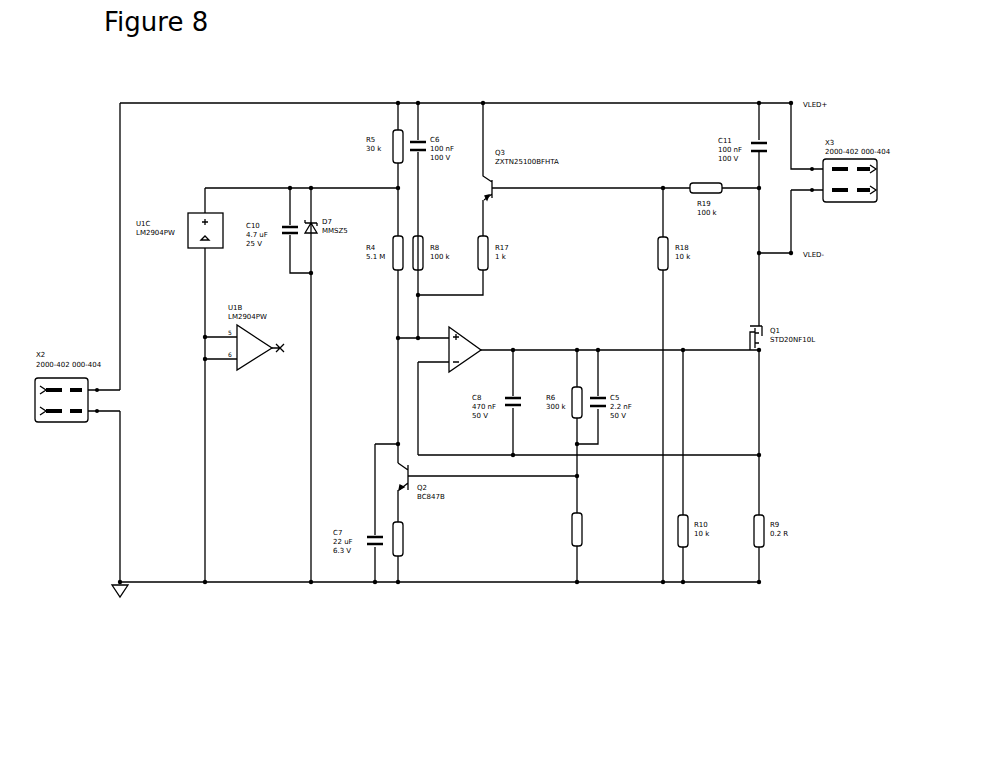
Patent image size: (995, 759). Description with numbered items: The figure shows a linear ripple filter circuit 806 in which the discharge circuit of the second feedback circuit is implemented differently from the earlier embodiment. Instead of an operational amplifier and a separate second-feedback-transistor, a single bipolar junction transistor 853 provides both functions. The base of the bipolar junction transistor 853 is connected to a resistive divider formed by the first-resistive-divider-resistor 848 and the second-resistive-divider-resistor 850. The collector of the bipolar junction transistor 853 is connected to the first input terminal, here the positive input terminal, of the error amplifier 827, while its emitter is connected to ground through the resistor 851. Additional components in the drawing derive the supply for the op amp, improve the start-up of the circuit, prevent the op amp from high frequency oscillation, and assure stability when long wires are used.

The ripple filter circuit 806 is at (477, 640).
The error amplifier 827 is at (452, 352).
The first-resistive-divider-resistor 848 is at (582, 388).
The second-resistive-divider-resistor 850 is at (584, 517).
The resistor 851 is at (418, 535).
The bipolar junction transistor 853 is at (413, 478).